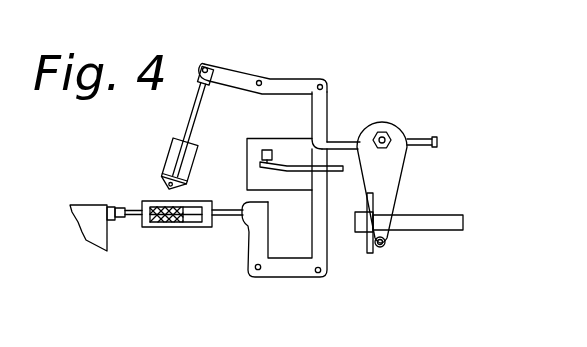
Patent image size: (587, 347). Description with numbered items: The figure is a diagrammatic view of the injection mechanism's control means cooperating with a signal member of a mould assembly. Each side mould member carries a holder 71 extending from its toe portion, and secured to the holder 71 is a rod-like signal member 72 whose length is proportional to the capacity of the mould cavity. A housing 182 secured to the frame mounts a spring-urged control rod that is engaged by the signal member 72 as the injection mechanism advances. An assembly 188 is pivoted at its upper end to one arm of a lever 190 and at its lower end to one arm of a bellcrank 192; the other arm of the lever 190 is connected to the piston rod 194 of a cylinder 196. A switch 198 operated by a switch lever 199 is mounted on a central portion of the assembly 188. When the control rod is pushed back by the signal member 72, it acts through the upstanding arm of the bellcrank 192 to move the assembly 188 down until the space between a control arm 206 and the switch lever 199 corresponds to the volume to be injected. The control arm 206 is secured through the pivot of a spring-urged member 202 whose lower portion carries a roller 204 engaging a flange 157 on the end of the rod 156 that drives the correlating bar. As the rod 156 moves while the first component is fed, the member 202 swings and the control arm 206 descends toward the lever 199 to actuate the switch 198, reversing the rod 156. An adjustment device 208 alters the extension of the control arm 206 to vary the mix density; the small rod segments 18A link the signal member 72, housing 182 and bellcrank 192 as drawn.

The lever 190 is at (287, 79).
The piston rod 194 is at (193, 115).
The cylinder 196 is at (172, 147).
The assembly 188 is at (328, 252).
The control arm 206 is at (343, 142).
The bellcrank 192 is at (288, 278).
The switch 198 is at (267, 150).
The lever 199 is at (307, 171).
The member 202 is at (398, 177).
The adjustment device 208 is at (437, 139).
The rod 156 is at (442, 222).
The flange 157 is at (371, 252).
The roller 204 is at (385, 247).
The holder 71 is at (107, 205).
The signal member 72 is at (120, 207).
The rod 18A is at (228, 210).
The housing 182 is at (175, 227).